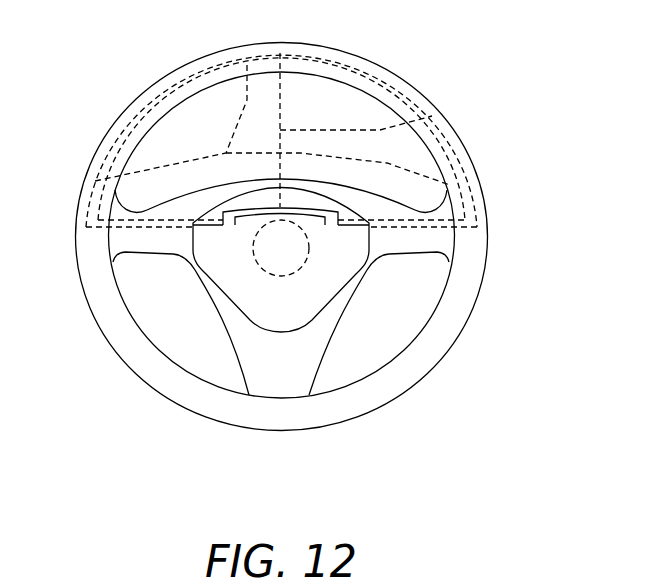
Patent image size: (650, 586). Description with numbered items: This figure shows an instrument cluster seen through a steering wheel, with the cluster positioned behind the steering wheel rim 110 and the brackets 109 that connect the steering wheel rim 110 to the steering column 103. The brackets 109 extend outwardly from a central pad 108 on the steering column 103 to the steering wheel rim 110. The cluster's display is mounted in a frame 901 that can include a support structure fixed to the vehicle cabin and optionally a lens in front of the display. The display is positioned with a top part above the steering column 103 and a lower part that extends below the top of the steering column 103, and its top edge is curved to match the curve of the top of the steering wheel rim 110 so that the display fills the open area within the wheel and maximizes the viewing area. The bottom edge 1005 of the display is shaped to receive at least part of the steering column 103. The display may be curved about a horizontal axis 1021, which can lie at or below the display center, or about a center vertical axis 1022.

The steering wheel rim 110 is at (121, 344).
The brackets 109 is at (437, 245).
The central pad 108 is at (268, 304).
The bottom edge 1005 is at (300, 222).
The steering column 103 is at (300, 277).
The frame 901 is at (153, 230).
The horizontal axis 1021 is at (247, 65).
The center vertical axis 1022 is at (432, 116).